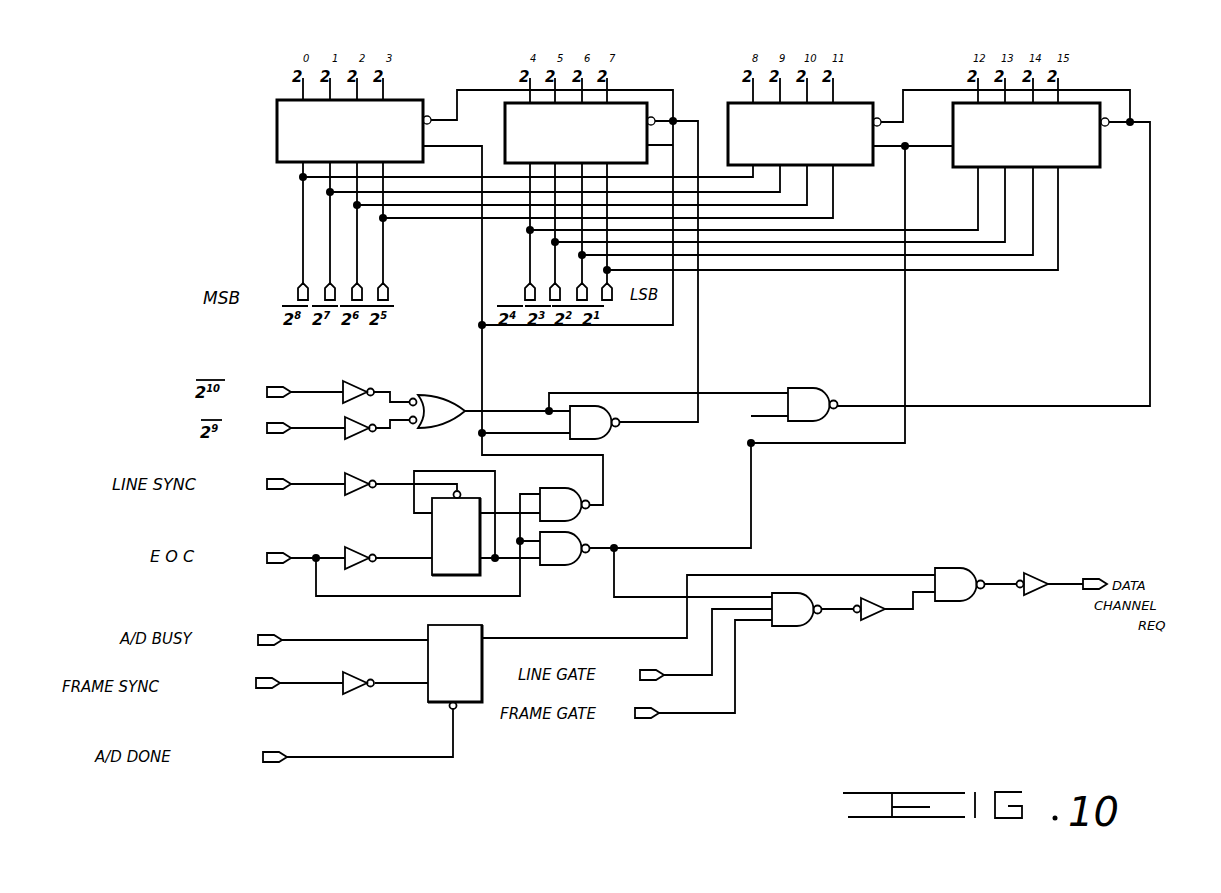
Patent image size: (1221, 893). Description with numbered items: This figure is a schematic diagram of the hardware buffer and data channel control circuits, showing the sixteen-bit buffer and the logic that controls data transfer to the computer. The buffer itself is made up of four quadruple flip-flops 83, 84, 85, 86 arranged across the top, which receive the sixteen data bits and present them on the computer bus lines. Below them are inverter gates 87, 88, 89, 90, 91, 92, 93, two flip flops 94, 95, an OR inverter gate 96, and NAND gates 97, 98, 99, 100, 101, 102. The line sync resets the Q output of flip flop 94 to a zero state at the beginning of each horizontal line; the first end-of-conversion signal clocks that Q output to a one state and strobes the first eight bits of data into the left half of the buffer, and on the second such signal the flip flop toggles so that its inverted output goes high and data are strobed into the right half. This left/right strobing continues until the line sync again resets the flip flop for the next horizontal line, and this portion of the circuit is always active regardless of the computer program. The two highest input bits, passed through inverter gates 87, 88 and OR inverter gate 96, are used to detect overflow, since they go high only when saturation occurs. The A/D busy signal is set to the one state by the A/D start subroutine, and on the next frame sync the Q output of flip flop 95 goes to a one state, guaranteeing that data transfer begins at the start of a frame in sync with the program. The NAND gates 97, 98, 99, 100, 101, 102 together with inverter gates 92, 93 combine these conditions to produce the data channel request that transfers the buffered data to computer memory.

The quadruple flip-flop 83 is at (277, 142).
The quadruple flip-flop 84 is at (505, 140).
The quadruple flip-flop 85 is at (728, 122).
The quadruple flip-flop 86 is at (953, 130).
The inverter gate 87 is at (352, 381).
The inverter gate 88 is at (360, 437).
The inverter gate 89 is at (355, 492).
The inverter gate 90 is at (353, 547).
The inverter gate 91 is at (350, 692).
The inverter gate 92 is at (870, 616).
The inverter gate 93 is at (1032, 595).
The flip flop 94 is at (432, 568).
The flip flop 95 is at (468, 704).
The OR inverter gate 96 is at (455, 395).
The NAND gate 97 is at (612, 440).
The NAND gate 98 is at (580, 516).
The NAND gate 99 is at (550, 565).
The NAND gate 100 is at (786, 626).
The NAND gate 101 is at (815, 385).
The NAND gate 102 is at (955, 601).